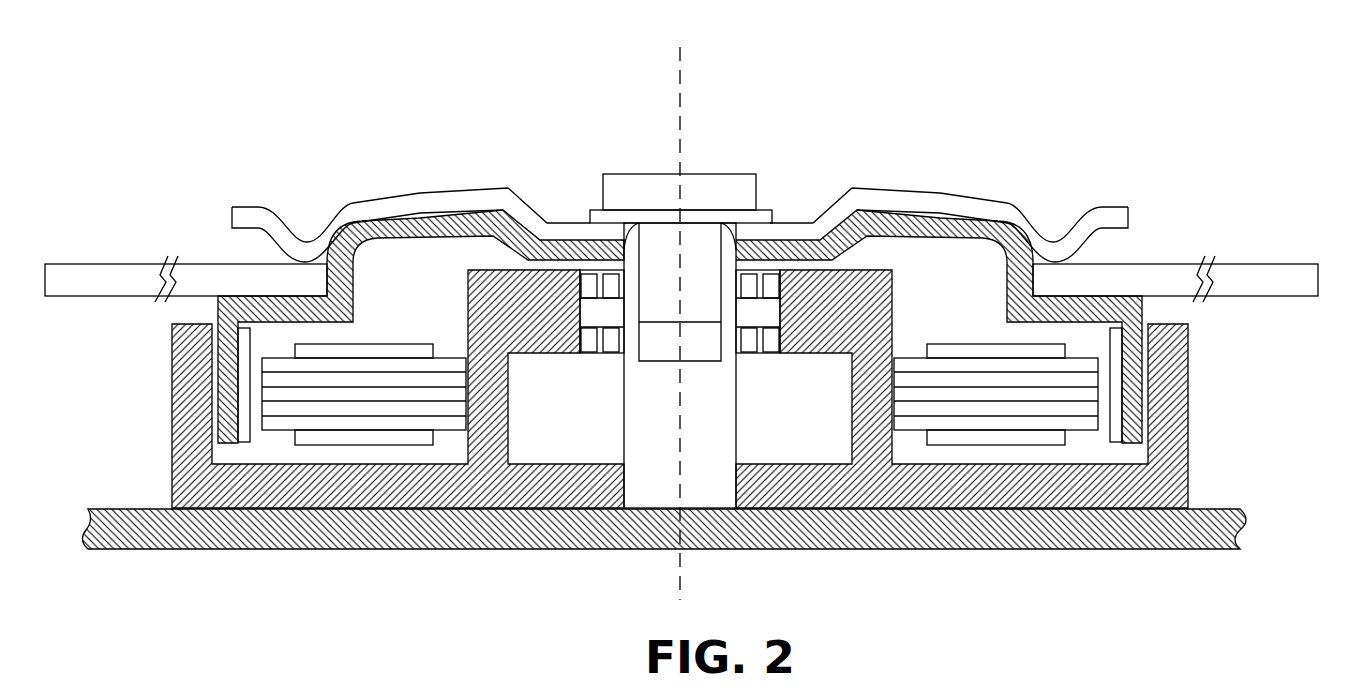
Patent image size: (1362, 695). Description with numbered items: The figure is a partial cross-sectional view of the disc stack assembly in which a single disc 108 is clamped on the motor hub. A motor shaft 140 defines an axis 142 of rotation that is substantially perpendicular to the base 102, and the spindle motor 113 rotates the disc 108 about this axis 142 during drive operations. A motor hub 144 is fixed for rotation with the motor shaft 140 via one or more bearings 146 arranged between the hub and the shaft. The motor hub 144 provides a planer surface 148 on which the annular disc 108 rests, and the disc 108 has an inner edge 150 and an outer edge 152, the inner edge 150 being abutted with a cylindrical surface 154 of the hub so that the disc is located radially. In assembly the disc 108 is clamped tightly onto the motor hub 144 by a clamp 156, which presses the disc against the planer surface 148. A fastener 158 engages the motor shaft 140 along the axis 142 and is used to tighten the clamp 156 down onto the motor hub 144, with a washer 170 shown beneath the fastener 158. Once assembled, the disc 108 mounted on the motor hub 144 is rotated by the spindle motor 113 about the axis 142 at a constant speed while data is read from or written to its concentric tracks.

The base 102 is at (1205, 508).
The disc 108 is at (125, 272).
The spindle motor 113 is at (516, 570).
The motor shaft 140 is at (648, 383).
The axis 142 is at (680, 107).
The motor hub 144 is at (945, 218).
The bearings 146 is at (747, 353).
The planer surface 148 is at (267, 296).
The inner edge 150 is at (1037, 280).
The outer edge 152 is at (1325, 276).
The cylindrical surface 154 is at (355, 205).
The clamp 156 is at (482, 170).
The fastener 158 is at (687, 192).
The washer 170 is at (742, 220).